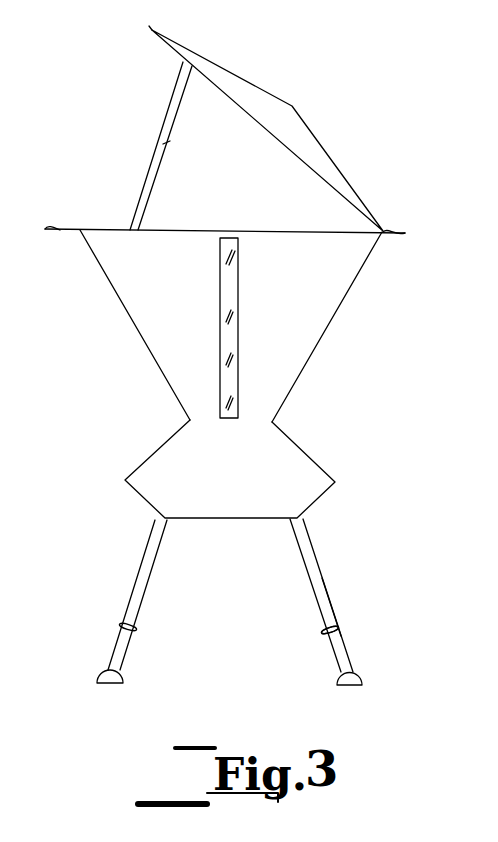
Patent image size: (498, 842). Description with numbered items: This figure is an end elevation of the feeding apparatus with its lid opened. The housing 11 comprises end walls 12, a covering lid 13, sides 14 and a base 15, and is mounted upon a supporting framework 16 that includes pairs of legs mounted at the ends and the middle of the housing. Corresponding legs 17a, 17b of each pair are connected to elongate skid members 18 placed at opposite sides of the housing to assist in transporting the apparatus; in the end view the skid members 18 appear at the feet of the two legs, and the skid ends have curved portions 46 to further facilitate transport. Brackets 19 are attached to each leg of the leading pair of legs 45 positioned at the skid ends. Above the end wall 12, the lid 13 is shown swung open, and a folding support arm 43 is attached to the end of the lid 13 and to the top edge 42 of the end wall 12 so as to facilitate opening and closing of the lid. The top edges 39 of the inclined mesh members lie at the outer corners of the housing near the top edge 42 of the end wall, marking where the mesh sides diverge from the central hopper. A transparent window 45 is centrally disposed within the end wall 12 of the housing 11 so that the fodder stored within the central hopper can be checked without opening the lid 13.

The housing 11 is at (432, 203).
The end wall 12 is at (230, 408).
The covering lid 13 is at (316, 136).
The sides 14 is at (87, 315).
The base 15 is at (232, 535).
The supporting framework 16 is at (313, 543).
The leg 17a is at (313, 598).
The leg 17b is at (152, 585).
The elongate skid member 18 is at (352, 688).
The bracket 19 is at (338, 627).
The top edge 39 is at (228, 239).
The top edge 42 is at (285, 230).
The folding support arm 43 is at (162, 173).
The transparent window 45 is at (222, 286).
The curved portion 46 is at (100, 676).